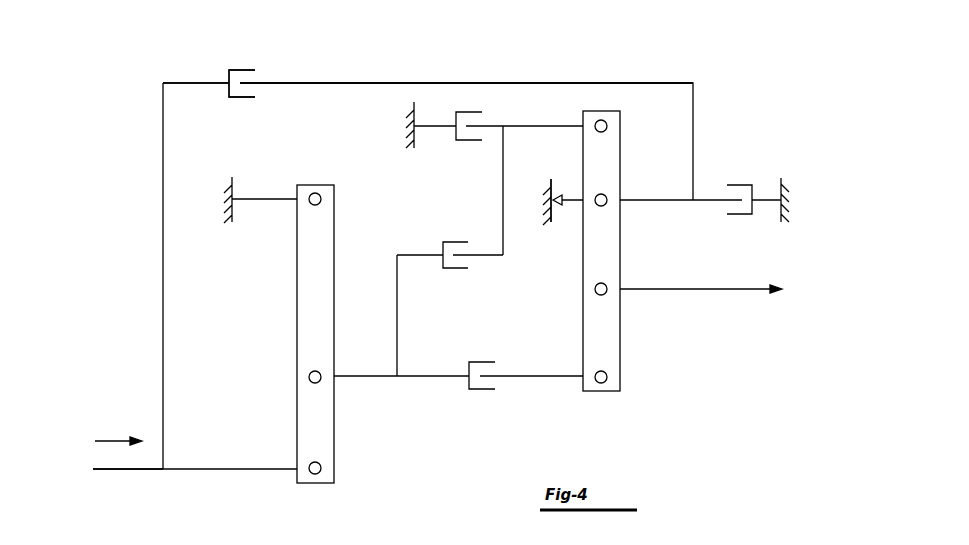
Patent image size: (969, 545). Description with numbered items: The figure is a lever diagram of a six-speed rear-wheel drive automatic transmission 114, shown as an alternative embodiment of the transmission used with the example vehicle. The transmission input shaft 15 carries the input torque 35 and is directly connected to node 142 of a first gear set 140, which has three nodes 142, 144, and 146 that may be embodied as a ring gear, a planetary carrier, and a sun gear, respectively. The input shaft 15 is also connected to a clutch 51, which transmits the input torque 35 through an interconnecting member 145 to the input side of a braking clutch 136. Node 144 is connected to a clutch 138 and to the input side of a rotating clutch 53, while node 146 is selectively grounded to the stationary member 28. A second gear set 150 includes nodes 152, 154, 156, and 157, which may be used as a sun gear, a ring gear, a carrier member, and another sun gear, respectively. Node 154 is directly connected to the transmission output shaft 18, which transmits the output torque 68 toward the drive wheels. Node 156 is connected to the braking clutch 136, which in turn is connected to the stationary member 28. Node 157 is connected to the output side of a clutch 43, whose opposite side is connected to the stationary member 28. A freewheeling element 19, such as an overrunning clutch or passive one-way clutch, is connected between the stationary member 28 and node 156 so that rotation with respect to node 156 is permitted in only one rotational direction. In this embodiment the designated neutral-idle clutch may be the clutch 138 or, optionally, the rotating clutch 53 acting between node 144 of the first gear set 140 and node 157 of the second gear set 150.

The transmission input shaft 15 is at (120, 470).
The transmission output shaft 18 is at (705, 292).
The freewheeling element 19 is at (562, 219).
The stationary member 28 is at (228, 199).
The input torque 35 is at (107, 442).
The clutch CB26 43 is at (467, 152).
The clutch C456 51 is at (272, 67).
The rotating clutch C35R 53 is at (456, 289).
The output torque 68 is at (789, 291).
The transmission 114 is at (722, 50).
The braking clutch CBR1 136 is at (768, 165).
The clutch C1234 138 is at (492, 348).
The first gear set 140 is at (297, 285).
The node 142 is at (315, 462).
The node 144 is at (315, 383).
The interconnecting member 145 is at (533, 83).
The node 146 is at (315, 193).
The second gear set 150 is at (583, 283).
The node 152 is at (601, 371).
The node 154 is at (601, 296).
The node 156 is at (601, 194).
The node 157 is at (604, 120).